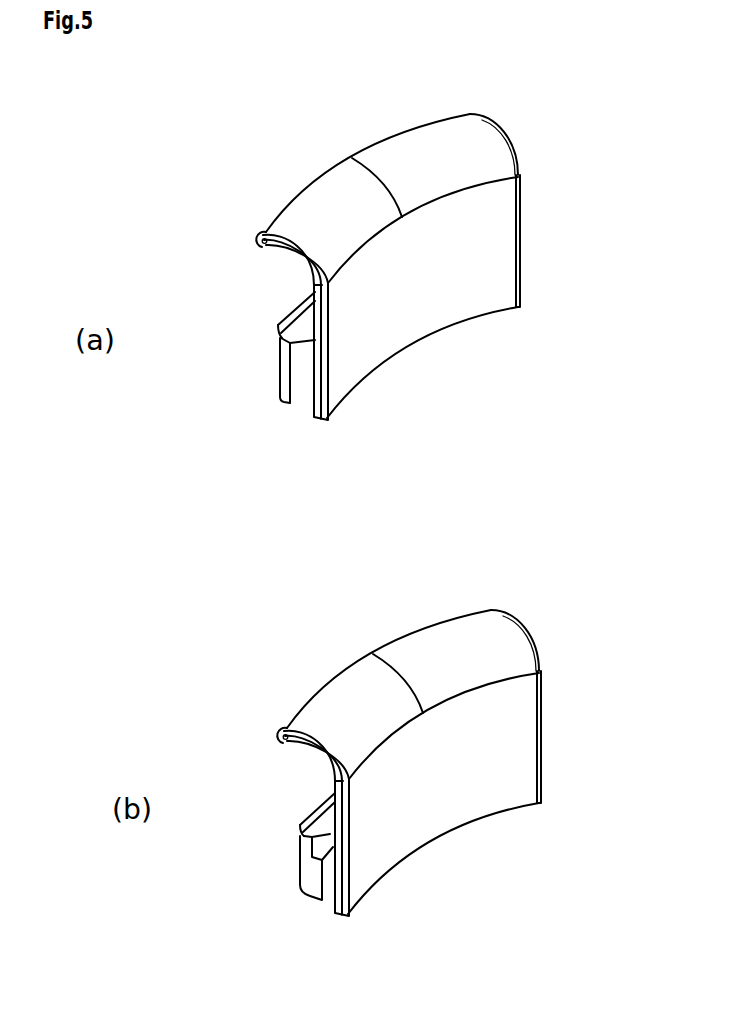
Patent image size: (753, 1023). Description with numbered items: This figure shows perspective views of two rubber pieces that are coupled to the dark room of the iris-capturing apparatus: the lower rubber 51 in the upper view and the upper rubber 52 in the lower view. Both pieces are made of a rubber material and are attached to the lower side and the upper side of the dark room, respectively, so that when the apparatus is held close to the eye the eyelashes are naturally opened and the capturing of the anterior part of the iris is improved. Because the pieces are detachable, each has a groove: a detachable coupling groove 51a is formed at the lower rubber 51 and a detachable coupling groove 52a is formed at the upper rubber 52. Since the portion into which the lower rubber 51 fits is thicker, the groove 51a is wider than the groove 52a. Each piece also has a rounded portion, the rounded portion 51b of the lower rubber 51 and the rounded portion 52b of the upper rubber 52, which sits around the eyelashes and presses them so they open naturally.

The lower rubber 51 is at (498, 233).
The detachable coupling groove 51a is at (300, 373).
The rounded portion 51b is at (343, 201).
The upper rubber 52 is at (507, 742).
The detachable coupling groove 52a is at (332, 872).
The rounded portion 52b is at (353, 688).